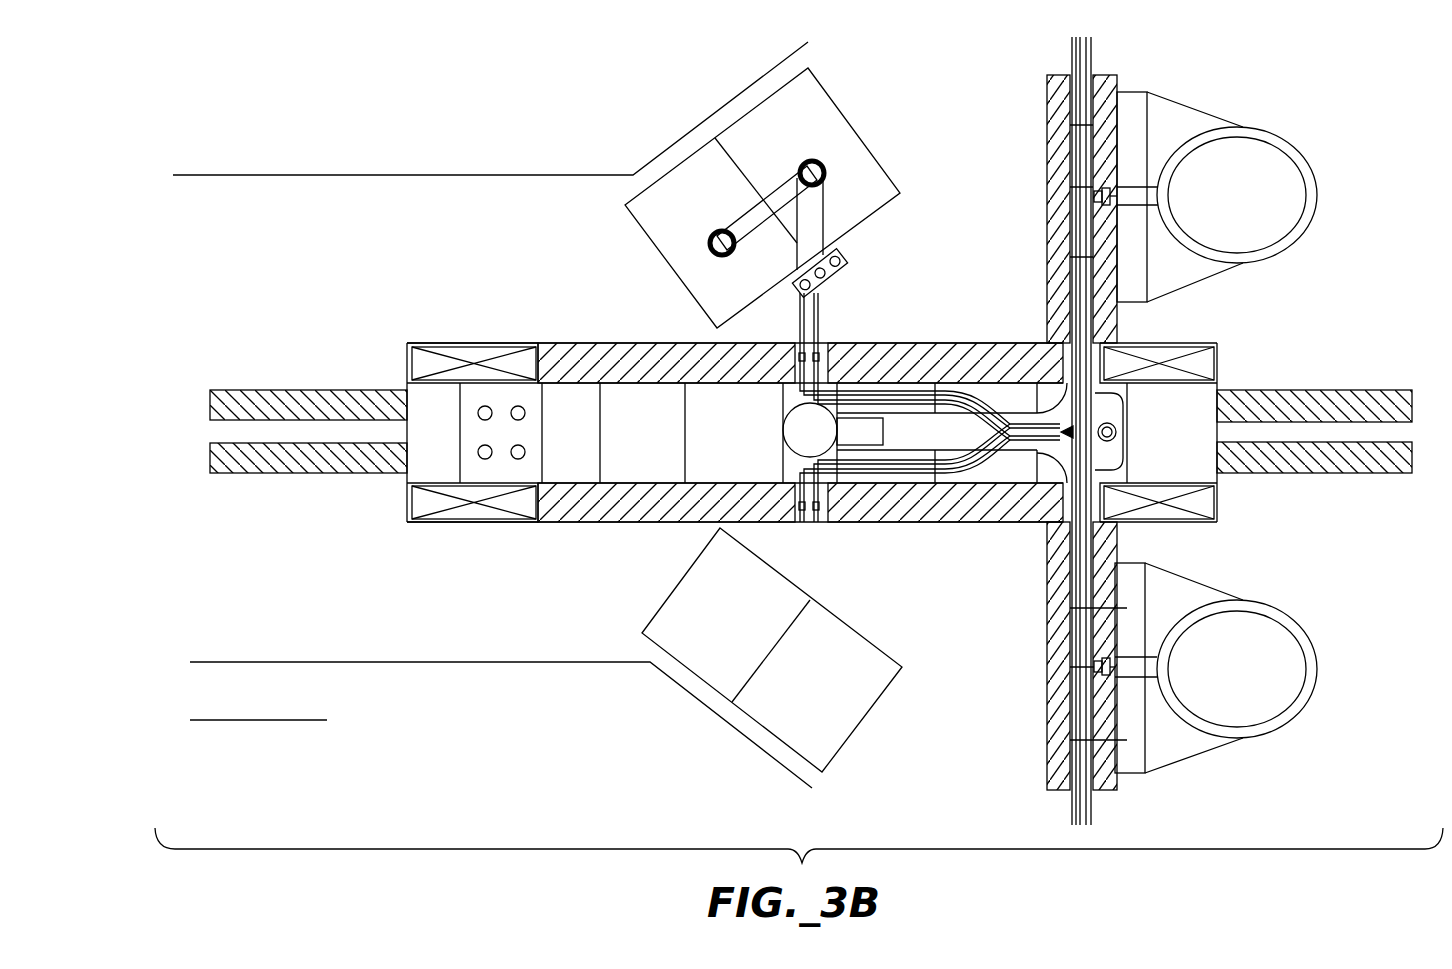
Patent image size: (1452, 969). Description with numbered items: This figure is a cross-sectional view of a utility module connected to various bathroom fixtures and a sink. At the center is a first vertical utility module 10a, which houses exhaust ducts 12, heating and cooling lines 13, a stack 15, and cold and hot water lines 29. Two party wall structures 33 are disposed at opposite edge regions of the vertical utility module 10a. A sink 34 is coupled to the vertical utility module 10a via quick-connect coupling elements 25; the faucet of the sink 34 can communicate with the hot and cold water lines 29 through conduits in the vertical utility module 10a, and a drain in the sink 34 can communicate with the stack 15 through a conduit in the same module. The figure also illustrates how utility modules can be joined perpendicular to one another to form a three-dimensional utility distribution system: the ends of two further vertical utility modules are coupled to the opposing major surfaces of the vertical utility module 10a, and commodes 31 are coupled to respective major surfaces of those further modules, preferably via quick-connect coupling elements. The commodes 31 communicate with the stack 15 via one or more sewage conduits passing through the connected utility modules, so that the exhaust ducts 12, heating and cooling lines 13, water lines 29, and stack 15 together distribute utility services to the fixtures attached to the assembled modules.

The first vertical utility module 10a is at (668, 462).
The exhaust ducts 12 is at (463, 331).
The heating and cooling lines 13 is at (523, 446).
The stack 15 is at (821, 441).
The quick-connect coupling elements 25 is at (828, 343).
The cold and hot water lines 29 is at (1108, 450).
The commodes 31 is at (1275, 131).
The party wall structures 33 is at (303, 390).
The sink 34 is at (843, 112).